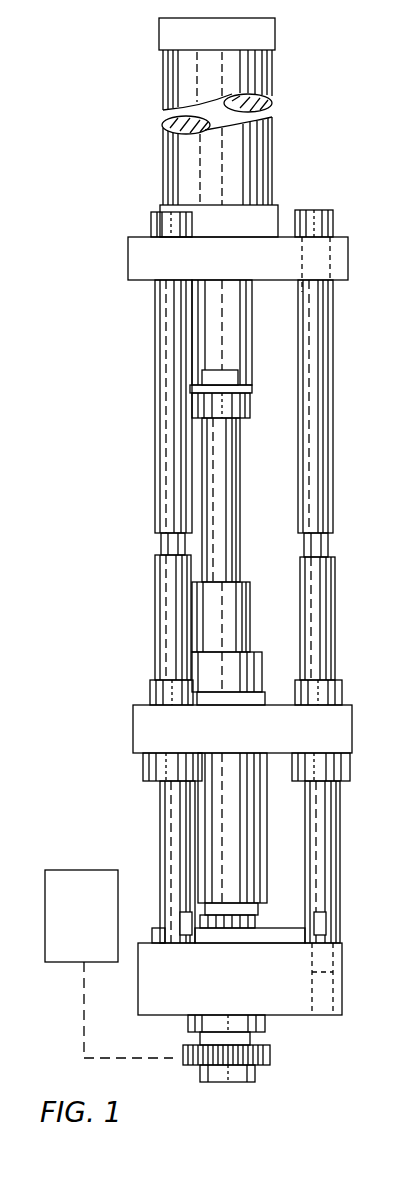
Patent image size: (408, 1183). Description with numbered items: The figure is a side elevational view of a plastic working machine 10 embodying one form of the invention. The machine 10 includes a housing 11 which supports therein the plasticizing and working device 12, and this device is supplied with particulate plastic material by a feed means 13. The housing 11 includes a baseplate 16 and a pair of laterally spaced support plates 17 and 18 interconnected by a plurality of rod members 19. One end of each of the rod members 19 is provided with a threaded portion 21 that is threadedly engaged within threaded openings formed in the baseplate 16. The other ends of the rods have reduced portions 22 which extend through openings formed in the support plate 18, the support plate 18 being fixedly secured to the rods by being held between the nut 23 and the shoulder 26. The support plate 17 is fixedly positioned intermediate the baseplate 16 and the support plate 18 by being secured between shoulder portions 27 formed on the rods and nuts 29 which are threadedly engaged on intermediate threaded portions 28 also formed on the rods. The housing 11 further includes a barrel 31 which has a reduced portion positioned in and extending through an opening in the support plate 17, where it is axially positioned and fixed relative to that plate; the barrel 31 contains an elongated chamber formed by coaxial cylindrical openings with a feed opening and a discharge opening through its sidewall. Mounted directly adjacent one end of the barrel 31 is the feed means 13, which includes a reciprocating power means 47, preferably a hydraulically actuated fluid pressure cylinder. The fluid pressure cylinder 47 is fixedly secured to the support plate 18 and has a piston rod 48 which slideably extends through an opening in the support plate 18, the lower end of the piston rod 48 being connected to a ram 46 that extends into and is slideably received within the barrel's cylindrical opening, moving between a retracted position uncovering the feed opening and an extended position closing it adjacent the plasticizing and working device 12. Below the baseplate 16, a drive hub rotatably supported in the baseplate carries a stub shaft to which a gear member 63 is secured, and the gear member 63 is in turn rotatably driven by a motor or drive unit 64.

The plastic working machine 10 is at (112, 431).
The housing 11 is at (368, 725).
The plasticizing and working device 12 is at (272, 607).
The feed means 13 is at (284, 148).
The baseplate 16 is at (148, 988).
The support plate 17 is at (145, 725).
The support plate 18 is at (135, 257).
The rod members 19 is at (163, 345).
The threaded portion 21 is at (328, 958).
The reduced portions 22 is at (318, 259).
The nut 23 is at (318, 226).
The shoulder 26 is at (332, 280).
The shoulder portions 27 is at (343, 688).
The intermediate threaded portions 28 is at (336, 784).
The nuts 29 is at (345, 768).
The barrel 31 is at (210, 838).
The ram 46 is at (230, 496).
The reciprocating power means 47 is at (260, 73).
The piston rod 48 is at (235, 327).
The gear member 63 is at (270, 1053).
The motor or drive unit 64 is at (80, 880).